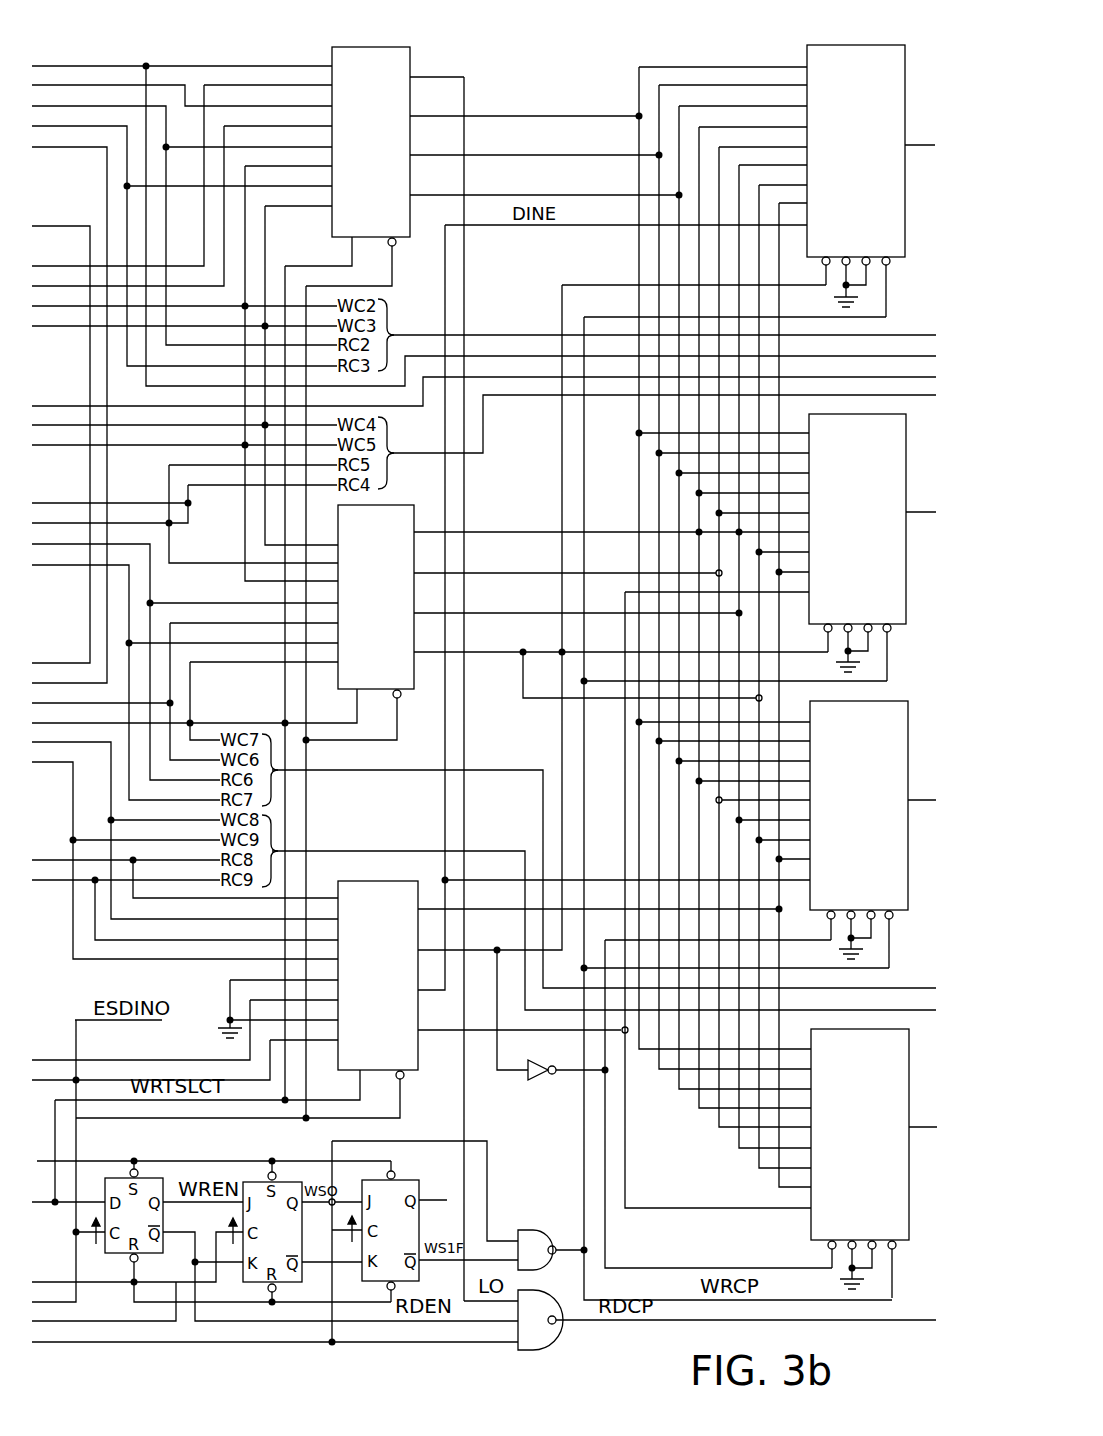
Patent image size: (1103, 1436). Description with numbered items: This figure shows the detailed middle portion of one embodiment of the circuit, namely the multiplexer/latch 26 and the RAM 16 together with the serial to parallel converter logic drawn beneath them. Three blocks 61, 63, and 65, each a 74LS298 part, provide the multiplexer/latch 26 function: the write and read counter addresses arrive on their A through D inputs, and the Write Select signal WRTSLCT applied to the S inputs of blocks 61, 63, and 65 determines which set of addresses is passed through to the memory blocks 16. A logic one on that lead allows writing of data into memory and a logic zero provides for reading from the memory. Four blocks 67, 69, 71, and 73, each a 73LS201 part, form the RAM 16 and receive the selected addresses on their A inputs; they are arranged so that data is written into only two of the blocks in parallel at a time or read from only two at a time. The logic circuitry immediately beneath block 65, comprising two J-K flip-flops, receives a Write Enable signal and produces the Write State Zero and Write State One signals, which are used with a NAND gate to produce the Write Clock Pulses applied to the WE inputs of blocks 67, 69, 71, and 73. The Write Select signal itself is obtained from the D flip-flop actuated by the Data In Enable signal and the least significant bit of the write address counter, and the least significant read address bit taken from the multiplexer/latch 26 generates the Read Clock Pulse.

The RAM 16 is at (856, 130).
The multiplexer/latch 26 is at (398, 120).
The multiplexer/latch block 61 is at (412, 52).
The multiplexer/latch block 63 is at (392, 502).
The multiplexer/latch block 65 is at (404, 882).
The RAM block 67 is at (884, 109).
The RAM block 69 is at (884, 479).
The RAM block 71 is at (886, 765).
The RAM block 73 is at (886, 1094).